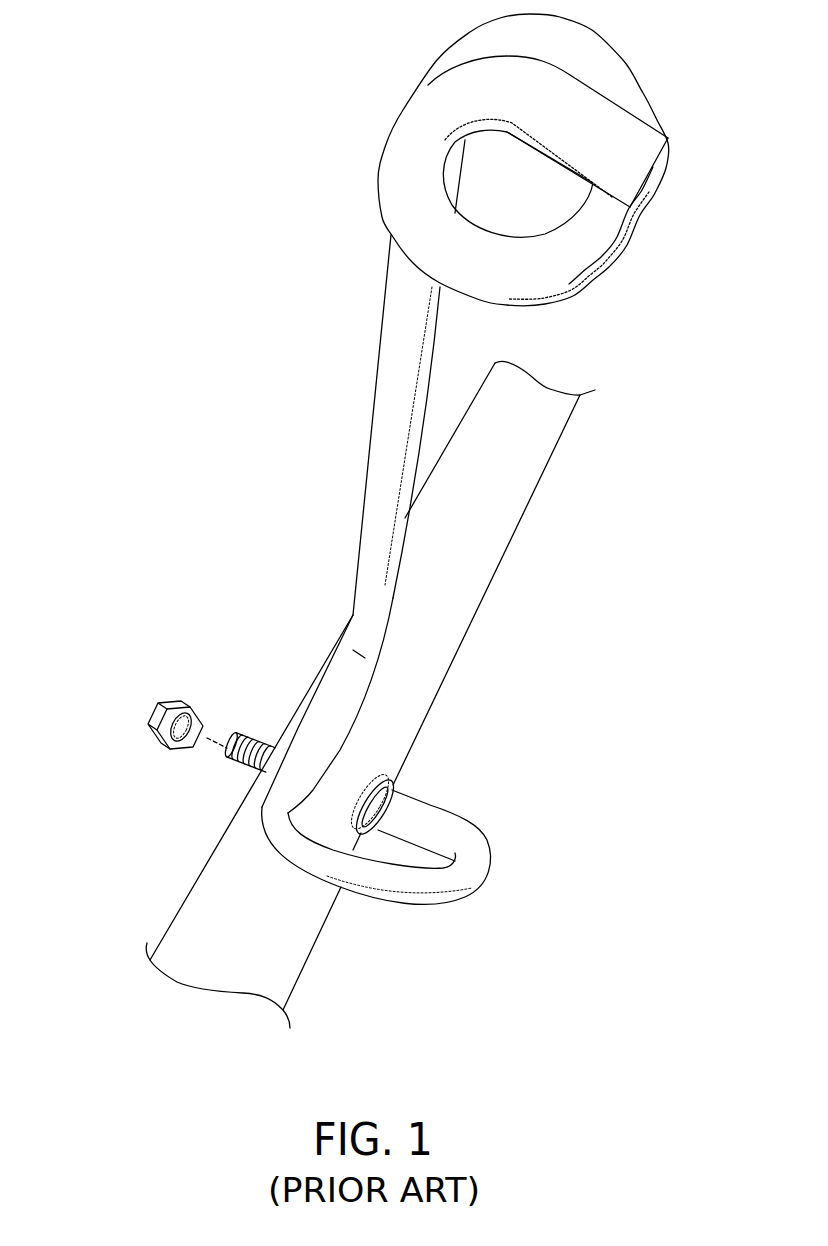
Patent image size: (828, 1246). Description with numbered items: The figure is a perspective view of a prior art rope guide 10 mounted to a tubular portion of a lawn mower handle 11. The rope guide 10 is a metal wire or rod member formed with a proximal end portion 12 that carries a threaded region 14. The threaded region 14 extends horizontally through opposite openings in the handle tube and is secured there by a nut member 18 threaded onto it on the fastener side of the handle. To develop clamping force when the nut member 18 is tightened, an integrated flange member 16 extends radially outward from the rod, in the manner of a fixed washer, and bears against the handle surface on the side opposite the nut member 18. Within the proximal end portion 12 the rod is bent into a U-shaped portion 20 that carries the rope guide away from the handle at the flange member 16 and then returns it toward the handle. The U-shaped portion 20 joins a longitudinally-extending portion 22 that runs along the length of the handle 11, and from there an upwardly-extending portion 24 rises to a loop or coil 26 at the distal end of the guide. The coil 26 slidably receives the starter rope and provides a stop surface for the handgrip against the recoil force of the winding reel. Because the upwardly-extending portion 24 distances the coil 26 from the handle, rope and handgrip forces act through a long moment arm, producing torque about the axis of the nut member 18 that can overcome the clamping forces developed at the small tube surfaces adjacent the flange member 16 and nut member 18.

The rope guide 10 is at (460, 495).
The mower handle 11 is at (203, 870).
The proximal end portion 12 is at (418, 883).
The threaded region 14 is at (257, 738).
The integrated flange member 16 is at (400, 787).
The nut member 18 is at (152, 738).
The U-shaped portion 20 is at (468, 895).
The longitudinally-extending portion 22 is at (325, 707).
The upwardly-extending portion 24 is at (395, 375).
The loop or coil 26 is at (453, 92).